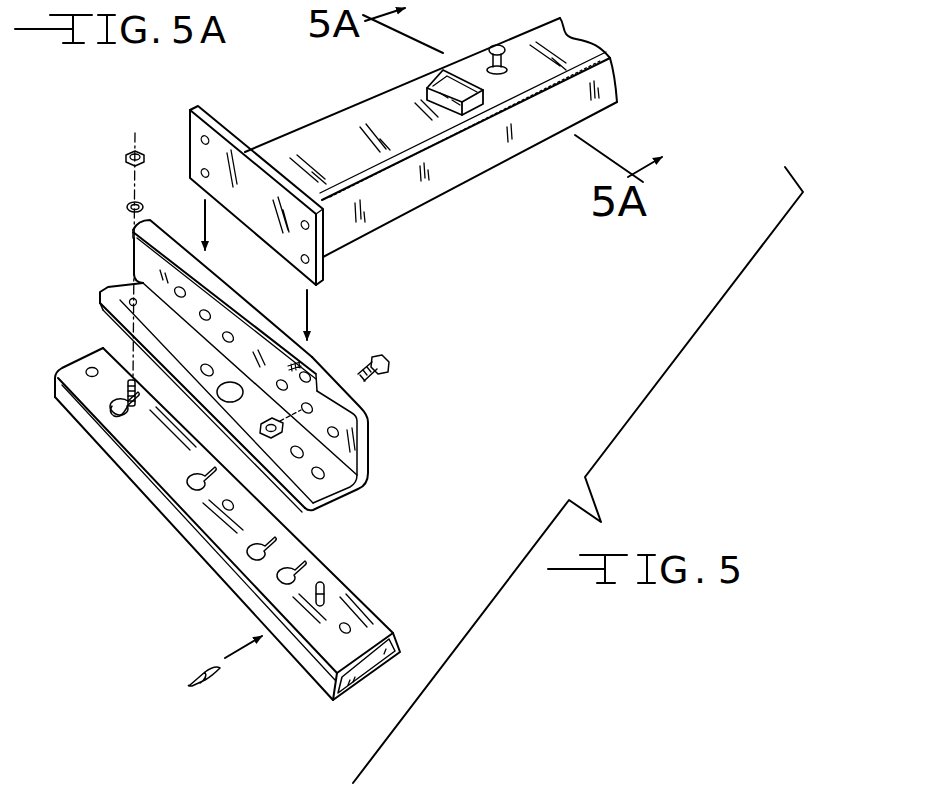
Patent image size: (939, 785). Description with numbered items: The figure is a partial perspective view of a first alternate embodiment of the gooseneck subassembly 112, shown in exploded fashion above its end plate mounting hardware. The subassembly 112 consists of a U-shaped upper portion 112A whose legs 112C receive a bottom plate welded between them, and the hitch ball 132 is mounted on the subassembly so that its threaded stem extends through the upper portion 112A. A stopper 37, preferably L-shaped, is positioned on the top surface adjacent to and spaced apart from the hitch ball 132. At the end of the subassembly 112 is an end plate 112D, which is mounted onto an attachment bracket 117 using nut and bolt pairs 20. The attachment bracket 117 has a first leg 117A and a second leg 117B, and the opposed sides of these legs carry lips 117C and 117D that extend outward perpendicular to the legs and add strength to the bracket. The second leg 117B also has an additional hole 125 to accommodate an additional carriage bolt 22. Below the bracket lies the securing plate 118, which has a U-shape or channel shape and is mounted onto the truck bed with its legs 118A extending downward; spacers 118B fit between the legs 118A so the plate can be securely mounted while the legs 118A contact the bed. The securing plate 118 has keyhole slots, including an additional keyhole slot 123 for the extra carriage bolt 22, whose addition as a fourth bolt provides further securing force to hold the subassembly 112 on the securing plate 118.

The first alternate gooseneck subassembly 112 is at (407, 200).
The U-shaped upper portion 112A is at (570, 47).
The legs of the upper portion 112C is at (605, 88).
The end plate 112D is at (223, 127).
The hitch ball 132 is at (495, 44).
The stopper 37 is at (470, 113).
The attachment bracket 117 is at (372, 432).
The first leg 117A is at (368, 410).
The second leg 117B is at (368, 484).
The lip 117C is at (230, 308).
The lip 117D is at (107, 290).
The nut and bolt pair 20 is at (380, 353).
The carriage bolt 22 is at (117, 393).
The additional hole 125 is at (303, 460).
The securing plate 118 is at (367, 617).
The legs of the securing plate 118A is at (398, 647).
The spacer 118B is at (370, 670).
The keyhole slot 123 is at (247, 553).